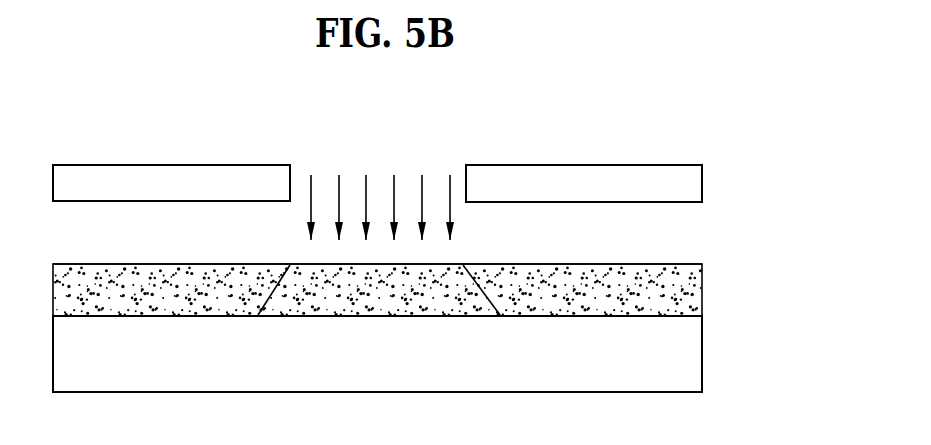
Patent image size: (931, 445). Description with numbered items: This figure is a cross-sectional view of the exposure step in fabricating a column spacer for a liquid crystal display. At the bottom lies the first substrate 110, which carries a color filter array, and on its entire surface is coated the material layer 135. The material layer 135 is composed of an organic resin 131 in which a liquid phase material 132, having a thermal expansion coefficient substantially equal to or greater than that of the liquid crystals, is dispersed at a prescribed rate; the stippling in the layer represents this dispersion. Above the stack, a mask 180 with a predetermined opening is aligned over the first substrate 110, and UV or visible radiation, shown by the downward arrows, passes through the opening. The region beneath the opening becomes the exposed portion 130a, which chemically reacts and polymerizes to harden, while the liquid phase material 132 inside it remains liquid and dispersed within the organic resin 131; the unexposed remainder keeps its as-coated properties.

The first substrate 110 is at (690, 353).
The exposed portion 130a is at (450, 265).
The organic resin 131 is at (700, 302).
The liquid phase material 132 is at (665, 268).
The material layer 135 is at (790, 258).
The mask 180 is at (700, 183).